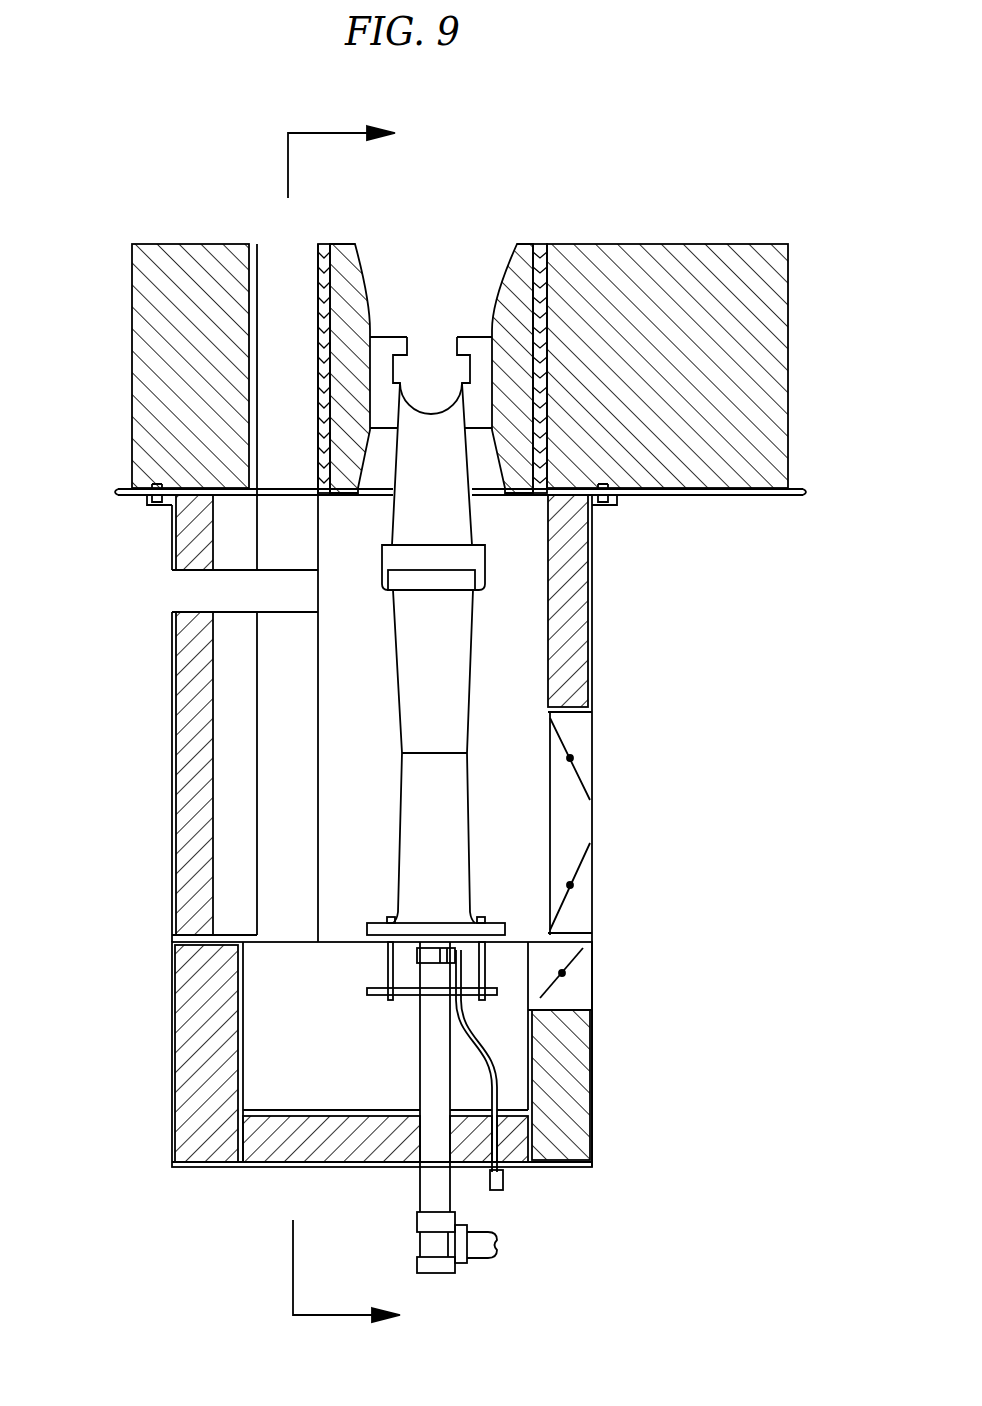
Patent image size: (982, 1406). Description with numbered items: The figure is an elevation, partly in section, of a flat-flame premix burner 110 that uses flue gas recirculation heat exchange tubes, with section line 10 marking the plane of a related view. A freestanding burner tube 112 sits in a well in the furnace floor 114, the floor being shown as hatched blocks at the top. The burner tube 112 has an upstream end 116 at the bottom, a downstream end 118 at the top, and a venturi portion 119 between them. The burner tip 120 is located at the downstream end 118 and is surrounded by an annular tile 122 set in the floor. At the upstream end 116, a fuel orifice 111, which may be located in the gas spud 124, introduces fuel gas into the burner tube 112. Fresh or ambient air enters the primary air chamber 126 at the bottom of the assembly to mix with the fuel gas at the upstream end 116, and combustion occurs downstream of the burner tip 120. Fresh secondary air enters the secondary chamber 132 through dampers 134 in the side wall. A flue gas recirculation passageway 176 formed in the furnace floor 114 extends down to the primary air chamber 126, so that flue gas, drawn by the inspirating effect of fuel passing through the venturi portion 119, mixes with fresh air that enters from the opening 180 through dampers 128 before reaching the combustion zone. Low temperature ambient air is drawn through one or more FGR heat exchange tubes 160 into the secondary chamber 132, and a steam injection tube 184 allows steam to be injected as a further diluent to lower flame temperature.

The section line 10 is at (349, 725).
The premix burner 110 is at (522, 152).
The fuel orifice 111 is at (437, 937).
The burner tube 112 is at (400, 803).
The furnace floor 114 is at (195, 244).
The upstream end 116 is at (470, 917).
The downstream end 118 is at (438, 338).
The venturi portion 119 is at (470, 703).
The burner tip 120 is at (420, 338).
The annular tile 122 is at (515, 243).
The gas spud 124 is at (388, 957).
The primary air chamber 126 is at (332, 1078).
The dampers 128 is at (570, 967).
The secondary chamber 132 is at (377, 863).
The dampers 134 is at (590, 843).
The FGR heat exchange tubes 160 is at (210, 588).
The flue gas recirculation passageway 176 is at (307, 721).
The opening 180 is at (577, 993).
The steam injection tube 184 is at (494, 1193).